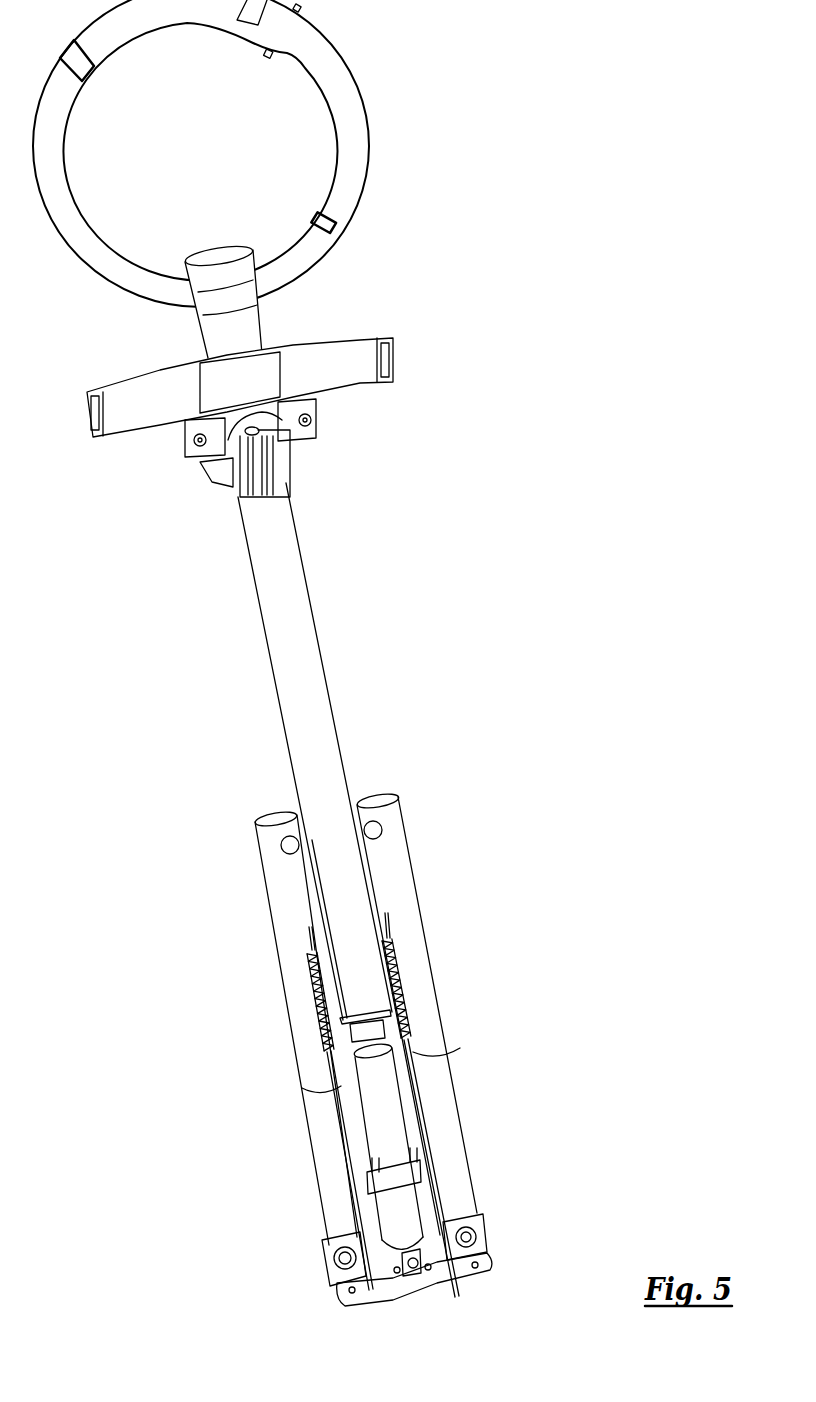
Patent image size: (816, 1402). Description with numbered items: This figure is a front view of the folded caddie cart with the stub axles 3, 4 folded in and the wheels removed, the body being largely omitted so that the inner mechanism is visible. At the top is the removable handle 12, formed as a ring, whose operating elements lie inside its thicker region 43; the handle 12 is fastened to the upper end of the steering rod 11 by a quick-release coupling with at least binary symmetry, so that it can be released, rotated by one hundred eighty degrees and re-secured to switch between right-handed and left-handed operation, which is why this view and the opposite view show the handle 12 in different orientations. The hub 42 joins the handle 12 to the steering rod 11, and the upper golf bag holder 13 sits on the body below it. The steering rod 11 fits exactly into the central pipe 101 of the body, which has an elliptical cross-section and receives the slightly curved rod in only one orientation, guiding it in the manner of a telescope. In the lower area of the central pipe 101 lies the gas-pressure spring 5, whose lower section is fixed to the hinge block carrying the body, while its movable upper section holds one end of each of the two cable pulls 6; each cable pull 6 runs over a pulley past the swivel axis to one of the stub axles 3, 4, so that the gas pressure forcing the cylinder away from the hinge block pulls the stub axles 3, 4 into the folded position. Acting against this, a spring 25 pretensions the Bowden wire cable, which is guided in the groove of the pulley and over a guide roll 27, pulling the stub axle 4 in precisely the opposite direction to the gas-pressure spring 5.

The stub axle 3 is at (280, 895).
The stub axle 4 is at (402, 875).
The gas-pressure spring 5 is at (390, 1122).
The cable pulls 6 is at (413, 1057).
The steering rod 11 is at (285, 550).
The handle 12 is at (314, 254).
The upper golf bag holder 13 is at (365, 363).
The spring 25 is at (398, 980).
The guide roll 27 is at (385, 1285).
The steering wheel hub 42 is at (222, 328).
The thicker region 43 is at (352, 108).
The central pipe 101 is at (280, 468).